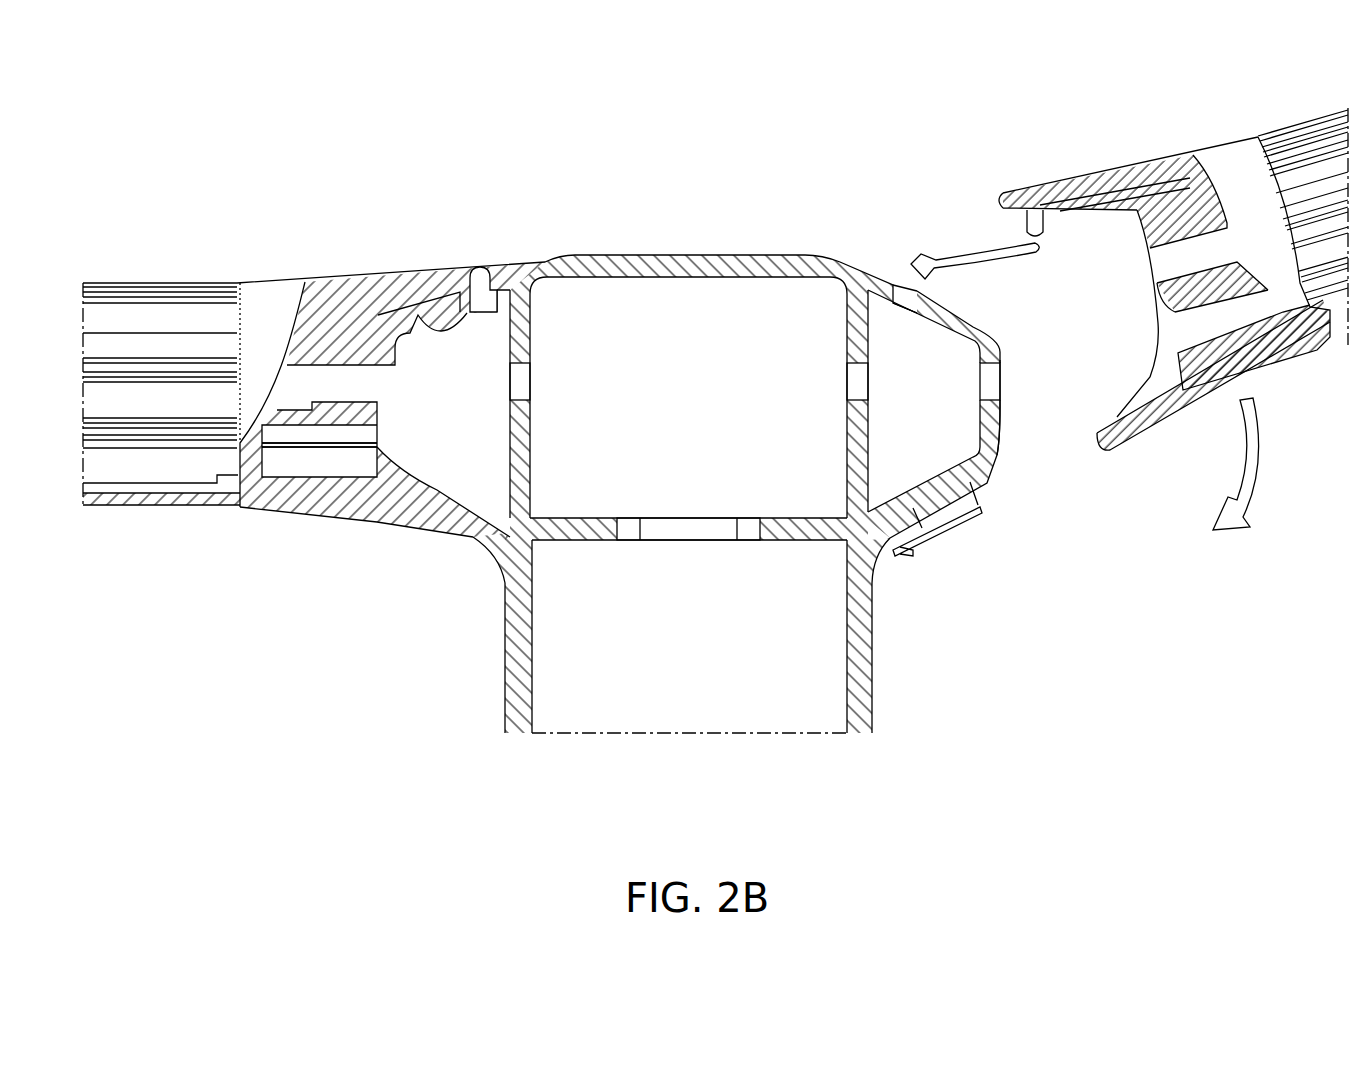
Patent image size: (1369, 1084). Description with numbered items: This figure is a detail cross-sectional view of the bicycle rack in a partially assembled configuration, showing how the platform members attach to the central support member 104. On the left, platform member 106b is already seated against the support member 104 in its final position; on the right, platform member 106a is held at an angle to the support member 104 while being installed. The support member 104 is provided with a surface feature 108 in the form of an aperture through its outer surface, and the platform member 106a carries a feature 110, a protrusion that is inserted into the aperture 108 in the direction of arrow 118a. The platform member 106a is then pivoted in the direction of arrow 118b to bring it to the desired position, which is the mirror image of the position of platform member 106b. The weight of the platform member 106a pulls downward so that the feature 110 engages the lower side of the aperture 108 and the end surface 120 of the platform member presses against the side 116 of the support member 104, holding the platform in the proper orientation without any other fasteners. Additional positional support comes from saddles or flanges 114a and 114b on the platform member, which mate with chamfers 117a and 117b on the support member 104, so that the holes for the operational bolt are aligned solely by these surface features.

The support member 104 is at (698, 253).
The platform member 106a is at (1262, 137).
The platform member 106b is at (160, 282).
The surface feature 108 is at (407, 308).
The feature 110 is at (487, 270).
The saddle/flange 114a is at (1074, 203).
The saddle/flange 114b is at (1123, 395).
The side 116 is at (1000, 458).
The chamfer 117a is at (440, 305).
The chamfer 117b is at (440, 493).
The arrow 118a is at (963, 258).
The arrow 118b is at (1268, 455).
The end surface 120 is at (1150, 300).